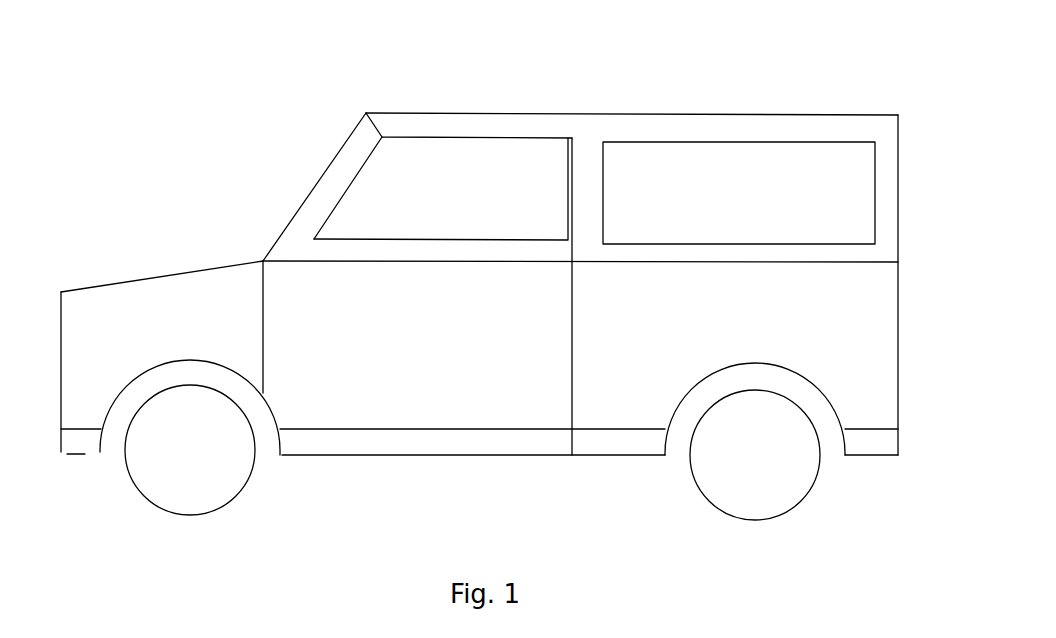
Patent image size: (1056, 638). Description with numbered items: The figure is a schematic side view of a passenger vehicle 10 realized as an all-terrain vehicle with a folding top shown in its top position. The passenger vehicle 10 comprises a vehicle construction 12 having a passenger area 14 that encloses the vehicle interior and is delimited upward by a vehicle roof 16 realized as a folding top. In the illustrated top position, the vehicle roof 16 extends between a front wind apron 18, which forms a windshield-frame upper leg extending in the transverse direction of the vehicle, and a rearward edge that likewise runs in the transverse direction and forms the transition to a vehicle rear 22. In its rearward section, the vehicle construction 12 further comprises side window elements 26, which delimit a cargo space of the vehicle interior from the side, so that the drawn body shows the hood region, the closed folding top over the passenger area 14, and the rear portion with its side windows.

The passenger vehicle 10 is at (555, 262).
The vehicle construction 12 is at (145, 270).
The passenger area 14 is at (367, 212).
The vehicle roof 16 is at (672, 128).
The front wind apron 18 is at (367, 130).
The vehicle rear 22 is at (898, 201).
The side window elements 26 is at (817, 152).